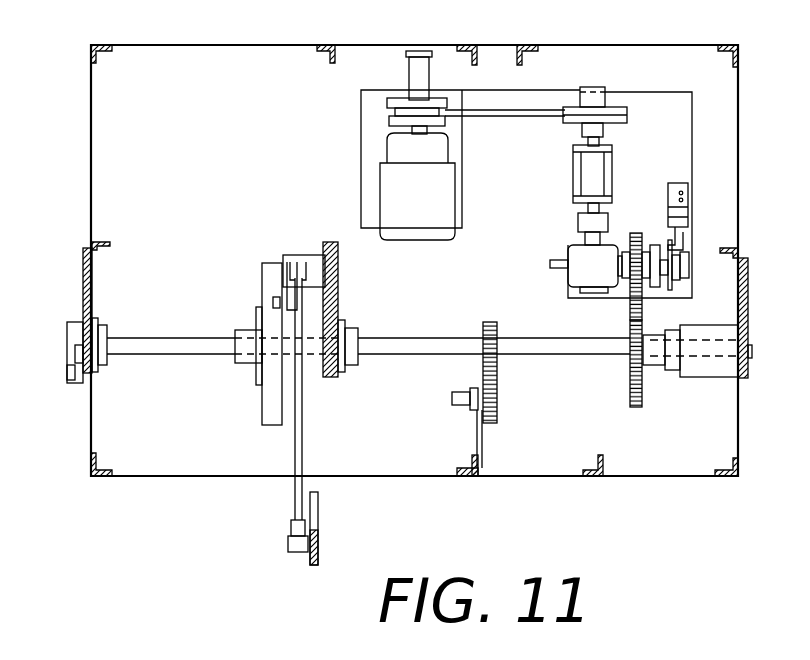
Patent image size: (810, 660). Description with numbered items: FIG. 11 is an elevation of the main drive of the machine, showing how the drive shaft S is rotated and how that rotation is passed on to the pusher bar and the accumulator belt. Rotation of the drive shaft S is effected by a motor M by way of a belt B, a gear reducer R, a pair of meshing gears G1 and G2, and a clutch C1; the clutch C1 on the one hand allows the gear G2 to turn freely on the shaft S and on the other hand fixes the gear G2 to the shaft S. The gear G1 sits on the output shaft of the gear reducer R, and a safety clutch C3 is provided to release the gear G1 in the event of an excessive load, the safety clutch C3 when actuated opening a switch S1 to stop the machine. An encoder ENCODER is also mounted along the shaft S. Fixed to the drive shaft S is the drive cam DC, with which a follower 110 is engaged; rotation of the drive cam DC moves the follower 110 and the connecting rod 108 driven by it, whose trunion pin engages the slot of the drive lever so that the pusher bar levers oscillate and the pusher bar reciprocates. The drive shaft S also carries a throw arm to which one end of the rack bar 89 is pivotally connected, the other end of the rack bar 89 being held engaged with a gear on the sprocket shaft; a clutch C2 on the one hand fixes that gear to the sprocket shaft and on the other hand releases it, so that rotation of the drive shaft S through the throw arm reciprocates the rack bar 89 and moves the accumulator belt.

The clutch C2 is at (39, 371).
The rack bar 89 is at (65, 397).
The follower 110 is at (267, 302).
The drive cam DC is at (260, 391).
The connecting rod 108 is at (302, 448).
The encoder ENCODER is at (482, 330).
The drive shaft S is at (404, 350).
The motor M is at (417, 145).
The belt B is at (517, 118).
The gear reducer R is at (590, 190).
The switch S1 is at (690, 195).
The safety clutch C3 is at (690, 256).
The gear G1 is at (628, 306).
The gear G2 is at (628, 376).
The clutch C1 is at (706, 378).